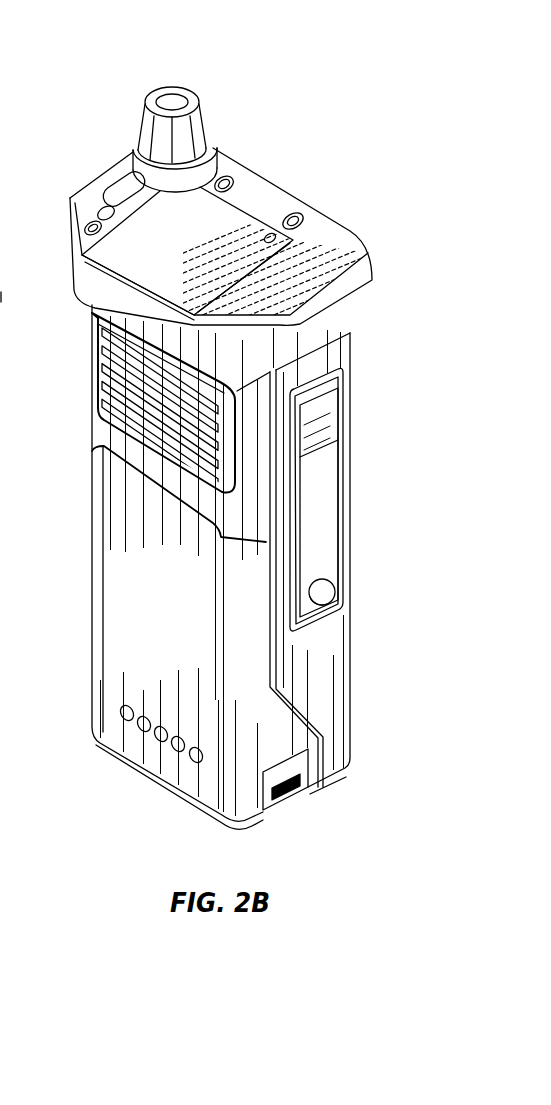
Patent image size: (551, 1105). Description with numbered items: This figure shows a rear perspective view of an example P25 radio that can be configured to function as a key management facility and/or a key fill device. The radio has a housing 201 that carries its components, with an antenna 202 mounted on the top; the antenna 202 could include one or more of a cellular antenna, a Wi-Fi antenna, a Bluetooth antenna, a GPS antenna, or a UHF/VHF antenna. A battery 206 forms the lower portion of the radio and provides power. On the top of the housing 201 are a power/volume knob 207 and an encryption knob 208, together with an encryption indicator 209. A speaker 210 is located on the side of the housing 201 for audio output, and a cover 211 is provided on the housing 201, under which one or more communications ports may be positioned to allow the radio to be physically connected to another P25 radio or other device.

The housing 201 is at (347, 720).
The antenna 202 is at (347, 193).
The battery 206 is at (115, 643).
The power/volume knob 207 is at (197, 93).
The encryption knob 208 is at (217, 153).
The encryption indicator 209 is at (113, 173).
The speaker 210 is at (103, 403).
The cover 211 is at (313, 518).